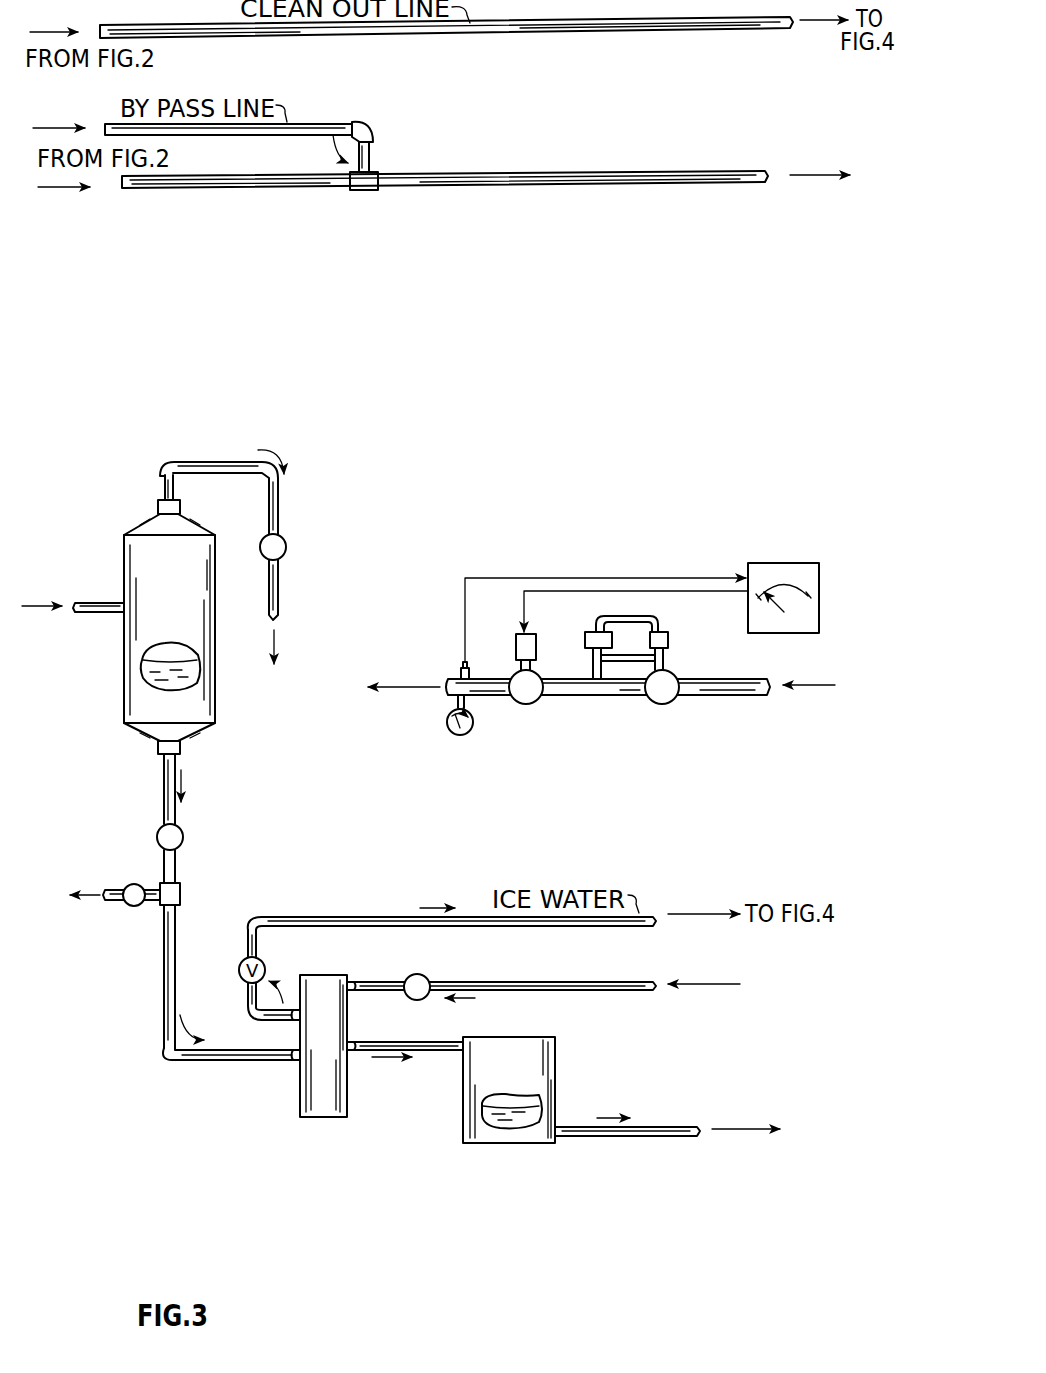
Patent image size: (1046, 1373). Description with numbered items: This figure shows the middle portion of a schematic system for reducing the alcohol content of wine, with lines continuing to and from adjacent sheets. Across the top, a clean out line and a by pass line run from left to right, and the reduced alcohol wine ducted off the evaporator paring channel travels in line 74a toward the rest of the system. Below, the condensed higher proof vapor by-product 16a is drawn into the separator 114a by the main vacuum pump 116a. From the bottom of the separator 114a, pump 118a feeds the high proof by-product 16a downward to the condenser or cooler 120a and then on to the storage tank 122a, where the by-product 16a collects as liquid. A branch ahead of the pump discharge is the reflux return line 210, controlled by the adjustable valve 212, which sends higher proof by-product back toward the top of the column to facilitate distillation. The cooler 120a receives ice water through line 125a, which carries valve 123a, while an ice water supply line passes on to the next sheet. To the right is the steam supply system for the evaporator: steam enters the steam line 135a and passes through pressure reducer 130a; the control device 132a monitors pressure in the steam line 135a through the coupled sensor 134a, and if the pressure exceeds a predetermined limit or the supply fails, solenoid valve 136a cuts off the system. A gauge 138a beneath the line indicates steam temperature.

The line 74a is at (457, 180).
The separator 114a is at (200, 603).
The main vacuum pump 116a is at (308, 567).
The vapor by-product 16a is at (192, 684).
The pump 118a is at (184, 838).
The adjustable valve 212 is at (133, 884).
The reflux return line 210 is at (113, 899).
The condenser or cooler 120a is at (318, 1058).
The valve 123a is at (426, 965).
The line 125a is at (572, 968).
The storage tank 122a is at (538, 1053).
The sensor 134a is at (460, 666).
The steam line 135a is at (448, 692).
The solenoid valve 136a is at (563, 667).
The gauge 138a is at (475, 725).
The pressure reducer 130a is at (670, 660).
The control device 132a is at (796, 568).